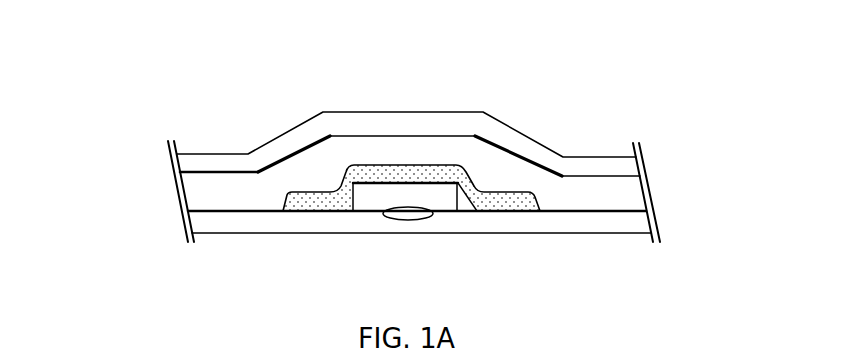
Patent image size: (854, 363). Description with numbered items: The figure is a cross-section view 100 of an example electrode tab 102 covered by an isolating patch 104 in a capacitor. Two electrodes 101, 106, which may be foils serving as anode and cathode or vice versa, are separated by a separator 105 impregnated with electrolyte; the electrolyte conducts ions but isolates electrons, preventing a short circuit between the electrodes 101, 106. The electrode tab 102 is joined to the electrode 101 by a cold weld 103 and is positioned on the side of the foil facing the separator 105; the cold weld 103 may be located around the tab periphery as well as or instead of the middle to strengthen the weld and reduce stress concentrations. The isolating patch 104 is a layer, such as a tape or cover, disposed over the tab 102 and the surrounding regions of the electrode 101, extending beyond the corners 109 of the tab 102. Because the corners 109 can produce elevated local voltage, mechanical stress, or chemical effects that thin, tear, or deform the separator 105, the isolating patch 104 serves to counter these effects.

The cross-section view 100 is at (618, 96).
The electrode 101 is at (207, 227).
The electrode tab 102 is at (377, 198).
The cold weld 103 is at (405, 215).
The isolating patch 104 is at (354, 168).
The separator 105 is at (390, 147).
The electrode 106 is at (463, 124).
The corners 109 is at (337, 186).